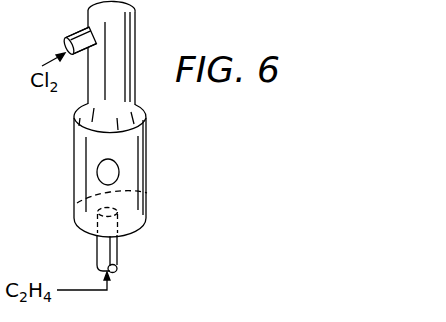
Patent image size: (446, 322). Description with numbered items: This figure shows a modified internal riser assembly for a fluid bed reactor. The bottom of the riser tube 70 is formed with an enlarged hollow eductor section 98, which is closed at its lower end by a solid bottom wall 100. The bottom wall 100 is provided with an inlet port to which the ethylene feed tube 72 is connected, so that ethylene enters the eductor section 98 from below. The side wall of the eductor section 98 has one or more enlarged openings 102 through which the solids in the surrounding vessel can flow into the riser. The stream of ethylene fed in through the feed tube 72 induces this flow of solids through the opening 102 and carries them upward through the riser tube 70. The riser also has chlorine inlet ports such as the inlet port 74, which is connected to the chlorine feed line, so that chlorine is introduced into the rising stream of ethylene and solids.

The riser tube 70 is at (128, 33).
The ethylene feed tube 72 is at (118, 253).
The chlorine inlet port 74 is at (78, 33).
The eductor section 98 is at (147, 163).
The solid bottom wall 100 is at (147, 193).
The enlarged opening 102 is at (98, 172).